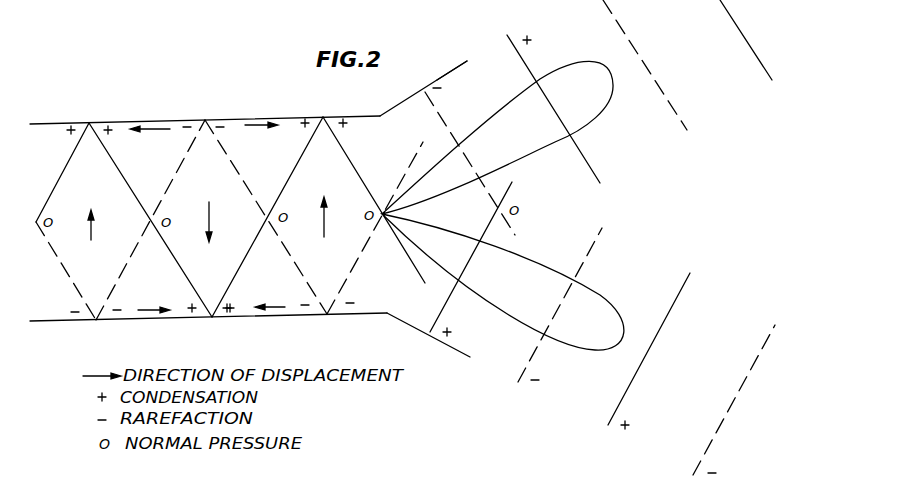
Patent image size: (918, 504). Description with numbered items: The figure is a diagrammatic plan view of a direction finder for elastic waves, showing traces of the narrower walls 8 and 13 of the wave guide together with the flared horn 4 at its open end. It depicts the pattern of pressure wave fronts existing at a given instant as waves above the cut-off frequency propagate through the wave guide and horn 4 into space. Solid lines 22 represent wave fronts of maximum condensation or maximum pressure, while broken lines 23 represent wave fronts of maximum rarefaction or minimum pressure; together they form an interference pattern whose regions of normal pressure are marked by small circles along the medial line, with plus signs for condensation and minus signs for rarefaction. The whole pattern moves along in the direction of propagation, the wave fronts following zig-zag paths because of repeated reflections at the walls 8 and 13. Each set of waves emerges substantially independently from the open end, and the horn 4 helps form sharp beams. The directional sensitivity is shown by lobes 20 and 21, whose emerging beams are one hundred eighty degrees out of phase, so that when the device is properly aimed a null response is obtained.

The wall 13 is at (136, 122).
The wall 8 is at (119, 322).
The horn 4 is at (437, 79).
The lobe 20 is at (592, 131).
The lobe 21 is at (591, 289).
The solid lines 22 is at (67, 164).
The broken lines 23 is at (68, 278).